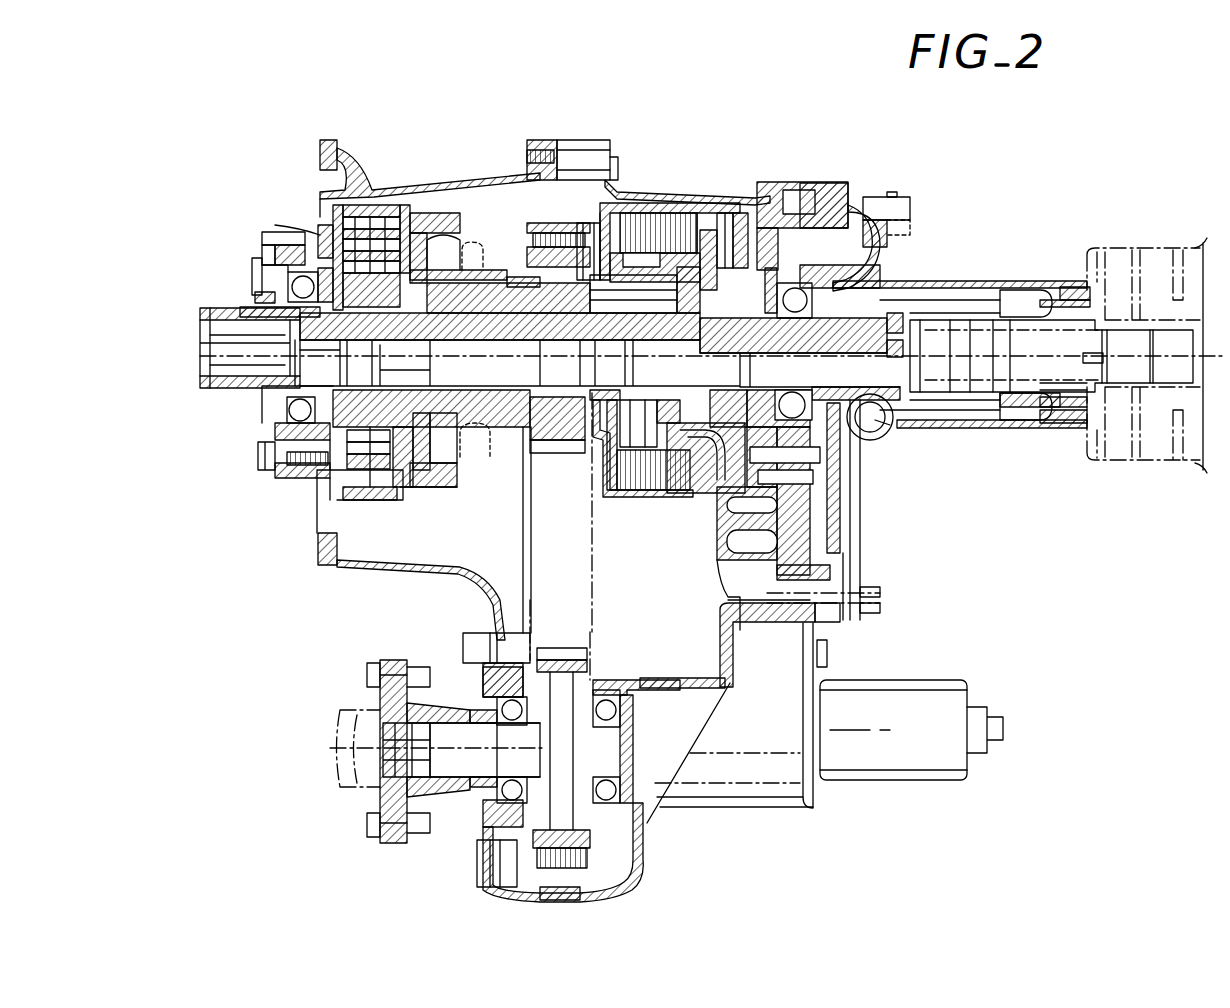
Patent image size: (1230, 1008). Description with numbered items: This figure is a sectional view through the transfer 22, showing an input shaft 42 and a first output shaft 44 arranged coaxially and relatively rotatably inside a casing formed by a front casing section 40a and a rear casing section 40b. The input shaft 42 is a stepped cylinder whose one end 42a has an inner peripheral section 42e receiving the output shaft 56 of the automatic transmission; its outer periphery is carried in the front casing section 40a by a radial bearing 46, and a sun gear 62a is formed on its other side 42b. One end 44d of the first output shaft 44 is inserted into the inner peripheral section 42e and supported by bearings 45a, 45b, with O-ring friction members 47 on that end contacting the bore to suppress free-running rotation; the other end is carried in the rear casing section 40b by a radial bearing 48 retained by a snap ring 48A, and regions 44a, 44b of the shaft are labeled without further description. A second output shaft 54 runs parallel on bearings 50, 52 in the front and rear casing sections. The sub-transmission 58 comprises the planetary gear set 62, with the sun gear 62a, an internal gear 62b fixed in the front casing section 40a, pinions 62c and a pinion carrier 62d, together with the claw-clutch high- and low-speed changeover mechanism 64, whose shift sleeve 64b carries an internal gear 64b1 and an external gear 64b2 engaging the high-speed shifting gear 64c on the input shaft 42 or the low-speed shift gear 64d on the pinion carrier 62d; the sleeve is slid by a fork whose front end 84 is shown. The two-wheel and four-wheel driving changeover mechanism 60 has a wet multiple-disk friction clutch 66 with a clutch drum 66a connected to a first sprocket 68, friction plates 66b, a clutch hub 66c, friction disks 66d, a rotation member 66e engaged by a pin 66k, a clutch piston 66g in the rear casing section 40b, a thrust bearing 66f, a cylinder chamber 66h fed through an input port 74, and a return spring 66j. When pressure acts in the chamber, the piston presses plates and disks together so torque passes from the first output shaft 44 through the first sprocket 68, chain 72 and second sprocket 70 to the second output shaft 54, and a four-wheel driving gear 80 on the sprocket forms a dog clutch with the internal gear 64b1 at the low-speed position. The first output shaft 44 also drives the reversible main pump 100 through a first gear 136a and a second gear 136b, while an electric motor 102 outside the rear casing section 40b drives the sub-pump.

The transfer 22 is at (555, 135).
The front casing section 40a is at (285, 240).
The rear casing section 40b is at (812, 197).
The input shaft 42 is at (216, 309).
The one end of input shaft 42a is at (262, 310).
The other side of input shaft 42b is at (345, 478).
The inner peripheral section 42e is at (337, 268).
The first output shaft 44 is at (950, 320).
The output shaft sleeve 44a is at (897, 307).
The output shaft bearing 44b is at (885, 430).
The one end of first output shaft 44d is at (278, 282).
The bearing 45a is at (290, 414).
The bearing 45b is at (378, 440).
The radial bearing 46 is at (268, 452).
The friction members 47 is at (290, 463).
The radial bearing 48 is at (860, 443).
The snap ring 48A is at (903, 223).
The bearing 50 is at (457, 762).
The bearing 52 is at (650, 828).
The second output shaft 54 is at (437, 790).
The output shaft of automatic transmission 56 is at (235, 362).
The sub-transmission 58 is at (490, 172).
The 2-wheel and 4-wheel driving changeover mechanism 60 is at (581, 210).
The planetary gear set 62 is at (488, 126).
The sun gear 62a is at (348, 220).
The internal gear 62b is at (365, 235).
The pinions 62c is at (380, 226).
The pinion carrier 62d is at (406, 256).
The high- and low-speed changeover mechanism 64 is at (468, 533).
The shift sleeve 64b is at (448, 432).
The internal gear 64b1 is at (440, 447).
The external gear 64b2 is at (423, 487).
The high-speed shifting gear 64c is at (410, 475).
The low-speed shift gear 64d is at (424, 445).
The friction clutch 66 is at (850, 126).
The clutch drum 66a is at (600, 200).
The friction plates 66b is at (667, 227).
The clutch hub 66c is at (611, 248).
The friction disks 66d is at (688, 240).
The rotation member 66e is at (700, 235).
The thrust bearing 66f is at (720, 240).
The clutch piston 66g is at (727, 255).
The cylinder chamber 66h is at (743, 257).
The return spring 66j is at (644, 470).
The pin 66k is at (610, 280).
The first sprocket 68 is at (560, 453).
The second sprocket 70 is at (560, 650).
The chain 72 is at (594, 552).
The input port 74 is at (808, 186).
The four-wheel driving gear 80 is at (520, 294).
The front end of fork 84 is at (471, 247).
The main pump 100 is at (857, 522).
The electric motor 102 is at (825, 723).
The first gear 136a is at (877, 288).
The second gear 136b is at (852, 513).